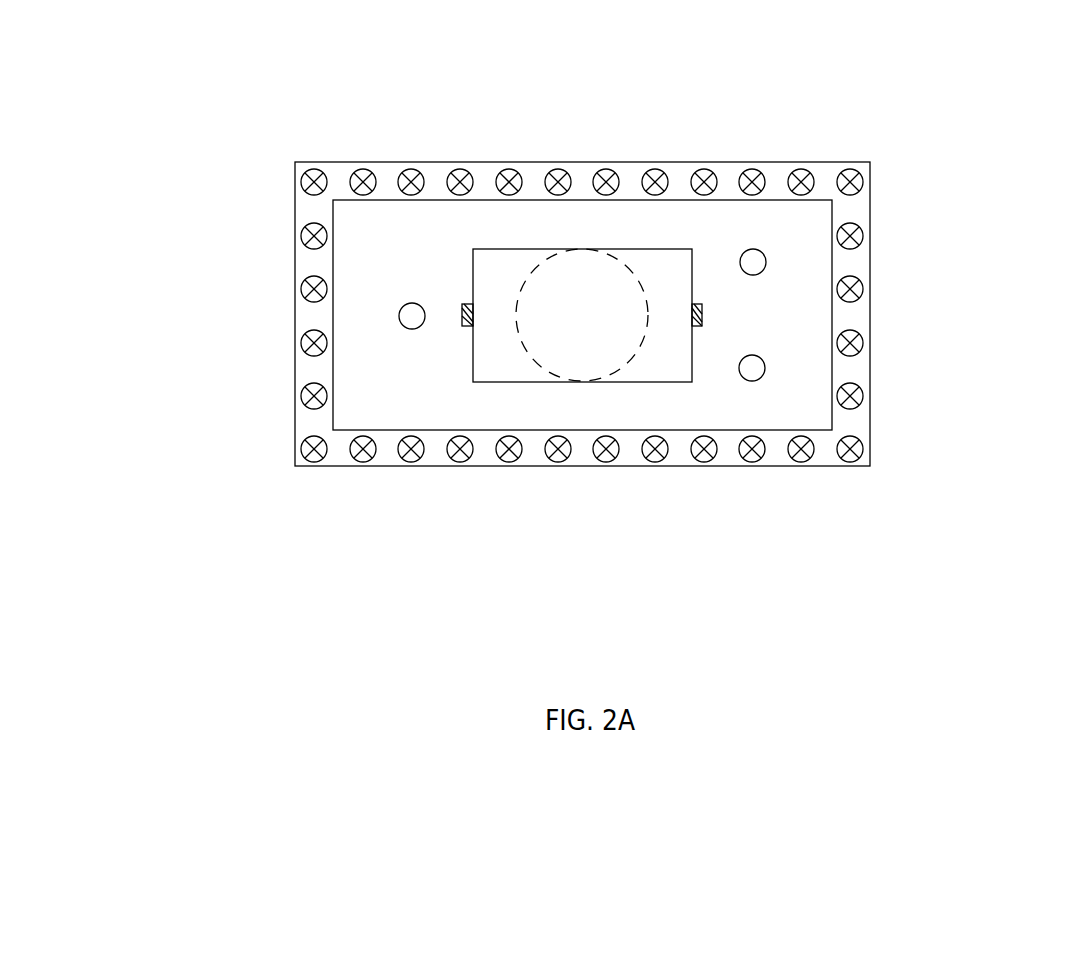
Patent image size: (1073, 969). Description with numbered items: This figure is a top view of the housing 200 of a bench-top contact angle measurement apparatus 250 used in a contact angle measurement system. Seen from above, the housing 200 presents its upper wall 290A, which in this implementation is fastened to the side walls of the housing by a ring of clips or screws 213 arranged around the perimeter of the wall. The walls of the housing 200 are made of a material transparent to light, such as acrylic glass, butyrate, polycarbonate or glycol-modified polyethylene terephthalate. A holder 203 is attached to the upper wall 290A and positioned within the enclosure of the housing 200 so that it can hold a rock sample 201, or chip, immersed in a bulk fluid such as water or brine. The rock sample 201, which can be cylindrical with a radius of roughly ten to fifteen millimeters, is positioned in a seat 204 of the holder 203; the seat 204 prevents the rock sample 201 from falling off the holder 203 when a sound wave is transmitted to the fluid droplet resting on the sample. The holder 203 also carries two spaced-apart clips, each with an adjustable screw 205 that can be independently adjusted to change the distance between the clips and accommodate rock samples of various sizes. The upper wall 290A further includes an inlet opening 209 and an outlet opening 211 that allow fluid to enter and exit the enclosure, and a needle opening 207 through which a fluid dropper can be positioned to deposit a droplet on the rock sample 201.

The housing 200 is at (587, 309).
The upper wall 290A is at (814, 212).
The seat 204 is at (493, 279).
The screws 213 is at (746, 167).
The holder 203 is at (640, 234).
The rock sample 201 is at (567, 258).
The adjustable screw 205 is at (696, 328).
The needle opening 207 is at (399, 318).
The inlet opening 209 is at (766, 262).
The outlet opening 211 is at (765, 368).
The bench-top contact angle measurement apparatus 250 is at (869, 528).